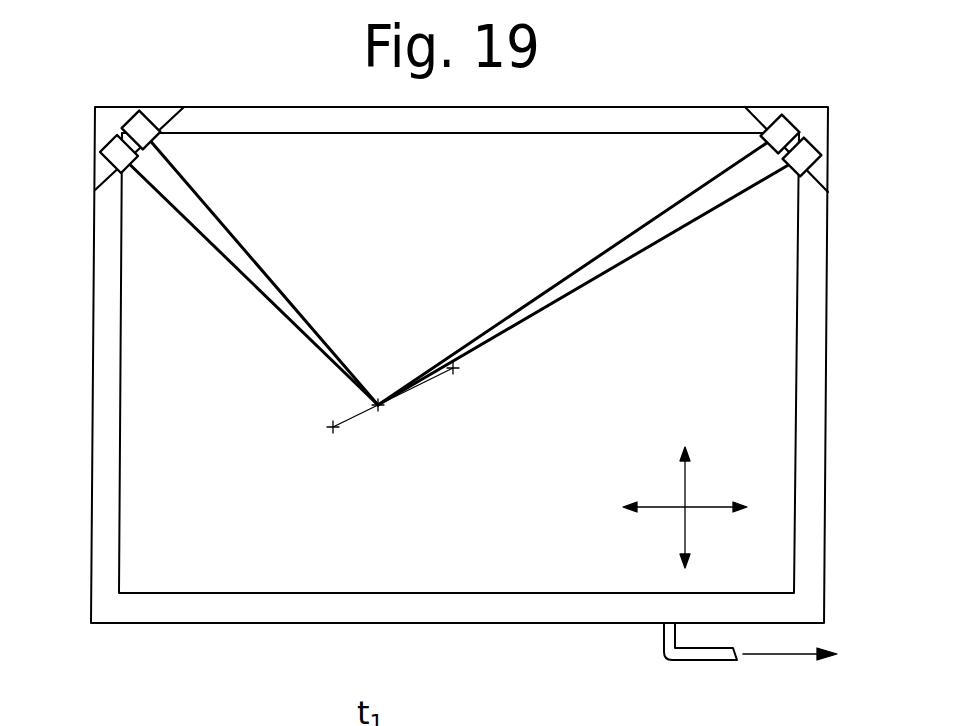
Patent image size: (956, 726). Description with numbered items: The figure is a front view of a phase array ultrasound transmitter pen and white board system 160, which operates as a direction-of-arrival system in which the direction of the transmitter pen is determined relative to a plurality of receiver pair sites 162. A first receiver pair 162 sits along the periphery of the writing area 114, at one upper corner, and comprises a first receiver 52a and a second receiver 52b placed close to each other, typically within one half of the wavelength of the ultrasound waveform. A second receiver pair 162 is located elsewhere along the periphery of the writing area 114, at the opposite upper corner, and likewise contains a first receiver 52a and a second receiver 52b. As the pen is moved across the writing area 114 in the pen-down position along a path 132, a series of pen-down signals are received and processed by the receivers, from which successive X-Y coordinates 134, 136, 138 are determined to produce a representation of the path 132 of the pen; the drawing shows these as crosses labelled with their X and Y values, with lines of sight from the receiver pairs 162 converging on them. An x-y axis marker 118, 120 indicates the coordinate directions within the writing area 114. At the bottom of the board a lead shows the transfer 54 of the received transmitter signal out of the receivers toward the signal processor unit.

The phase array transmitter pen and white board system 160 is at (322, 88).
The writing area 114 is at (555, 133).
The receiver pair 162 is at (112, 120).
The first receiver 52a is at (100, 148).
The second receiver 52b is at (157, 125).
The path 132 is at (427, 357).
The first touch point (X1,Y1) 134 is at (334, 425).
The X-Y coordinate 136 is at (378, 400).
The X-Y coordinate 138 is at (460, 366).
The x axis 118 is at (718, 492).
The y axis 120 is at (658, 532).
The transfer 54 is at (715, 663).